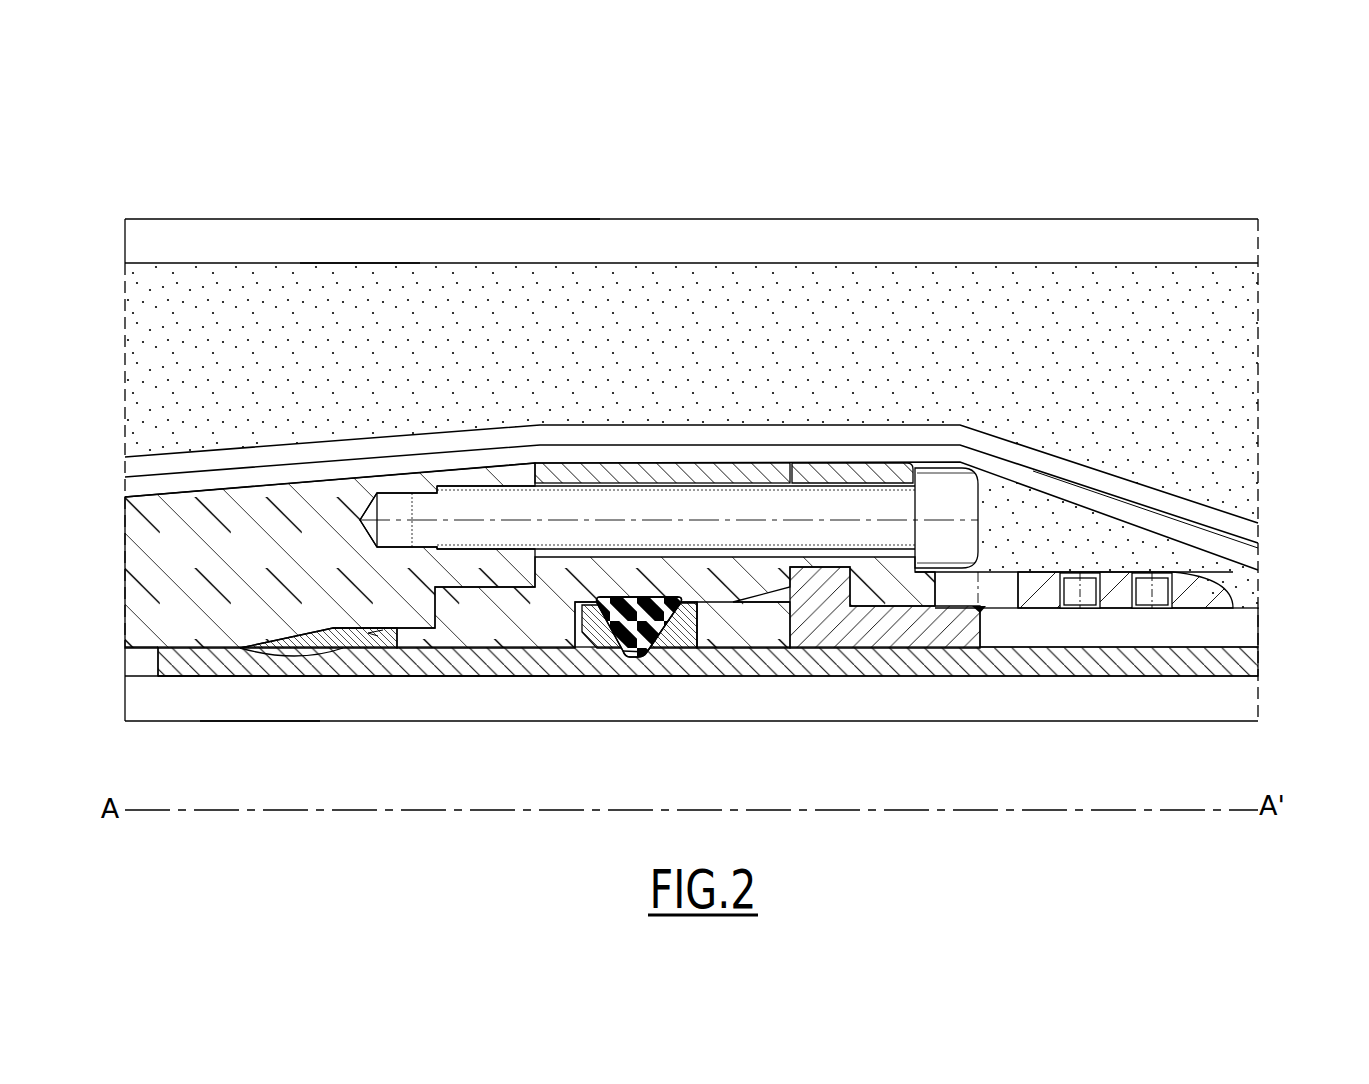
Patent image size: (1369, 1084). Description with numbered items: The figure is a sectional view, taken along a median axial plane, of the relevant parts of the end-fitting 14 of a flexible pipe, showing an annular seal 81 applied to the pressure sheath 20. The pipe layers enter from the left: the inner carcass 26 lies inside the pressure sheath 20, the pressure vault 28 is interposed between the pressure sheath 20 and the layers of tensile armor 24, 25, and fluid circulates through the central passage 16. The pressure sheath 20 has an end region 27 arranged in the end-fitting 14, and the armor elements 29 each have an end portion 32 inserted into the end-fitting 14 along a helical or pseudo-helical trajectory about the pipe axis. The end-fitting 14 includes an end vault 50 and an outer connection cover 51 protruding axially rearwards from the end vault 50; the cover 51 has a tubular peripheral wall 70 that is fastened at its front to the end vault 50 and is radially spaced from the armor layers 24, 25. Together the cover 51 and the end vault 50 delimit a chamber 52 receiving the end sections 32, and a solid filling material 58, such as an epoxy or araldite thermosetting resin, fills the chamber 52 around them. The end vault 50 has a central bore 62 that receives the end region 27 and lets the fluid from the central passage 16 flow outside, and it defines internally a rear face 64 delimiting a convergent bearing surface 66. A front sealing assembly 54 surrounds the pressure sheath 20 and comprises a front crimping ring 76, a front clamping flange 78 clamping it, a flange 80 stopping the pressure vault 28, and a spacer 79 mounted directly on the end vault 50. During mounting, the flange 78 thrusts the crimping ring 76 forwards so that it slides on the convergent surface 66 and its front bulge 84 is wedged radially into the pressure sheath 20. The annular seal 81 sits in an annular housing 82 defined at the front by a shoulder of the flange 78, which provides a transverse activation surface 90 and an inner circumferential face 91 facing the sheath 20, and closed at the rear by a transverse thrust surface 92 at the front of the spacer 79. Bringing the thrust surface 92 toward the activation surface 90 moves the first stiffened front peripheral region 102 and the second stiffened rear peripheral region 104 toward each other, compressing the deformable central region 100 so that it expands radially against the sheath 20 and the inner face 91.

The end-fitting 14 is at (1297, 146).
The central passage 16 is at (638, 689).
The pressure sheath 20 is at (1250, 668).
The layer of tensile armor 24 is at (1250, 558).
The layer of tensile armor 25 is at (1250, 535).
The inner carcass 26 is at (1250, 702).
The end region 27 is at (443, 663).
The pressure vault 28 is at (1250, 628).
The armor elements 29 is at (1168, 530).
The end portion 32 is at (1125, 457).
The end vault 50 is at (125, 552).
The outer connection cover 51 is at (448, 216).
The chamber 52 is at (691, 435).
The front sealing assembly 54 is at (249, 745).
The solid filling material 58 is at (348, 313).
The central bore 62 is at (130, 707).
The rear face 64 is at (538, 480).
The convergent bearing surface 66 is at (282, 633).
The tubular peripheral wall 70 is at (816, 243).
The front crimping ring 76 is at (337, 637).
The front clamping flange 78 is at (753, 478).
The spacer 79 is at (848, 625).
The flange 80 is at (847, 478).
The annular seal 81 is at (677, 672).
The annular housing 82 is at (560, 643).
The front bulge 84 is at (291, 652).
The transverse activation surface 90 is at (622, 598).
The inner circumferential face 91 is at (683, 603).
The transverse thrust surface 92 is at (677, 652).
The deformable central region 100 is at (655, 598).
The first stiffened front peripheral region 102 is at (595, 637).
The second stiffened rear peripheral region 104 is at (677, 623).